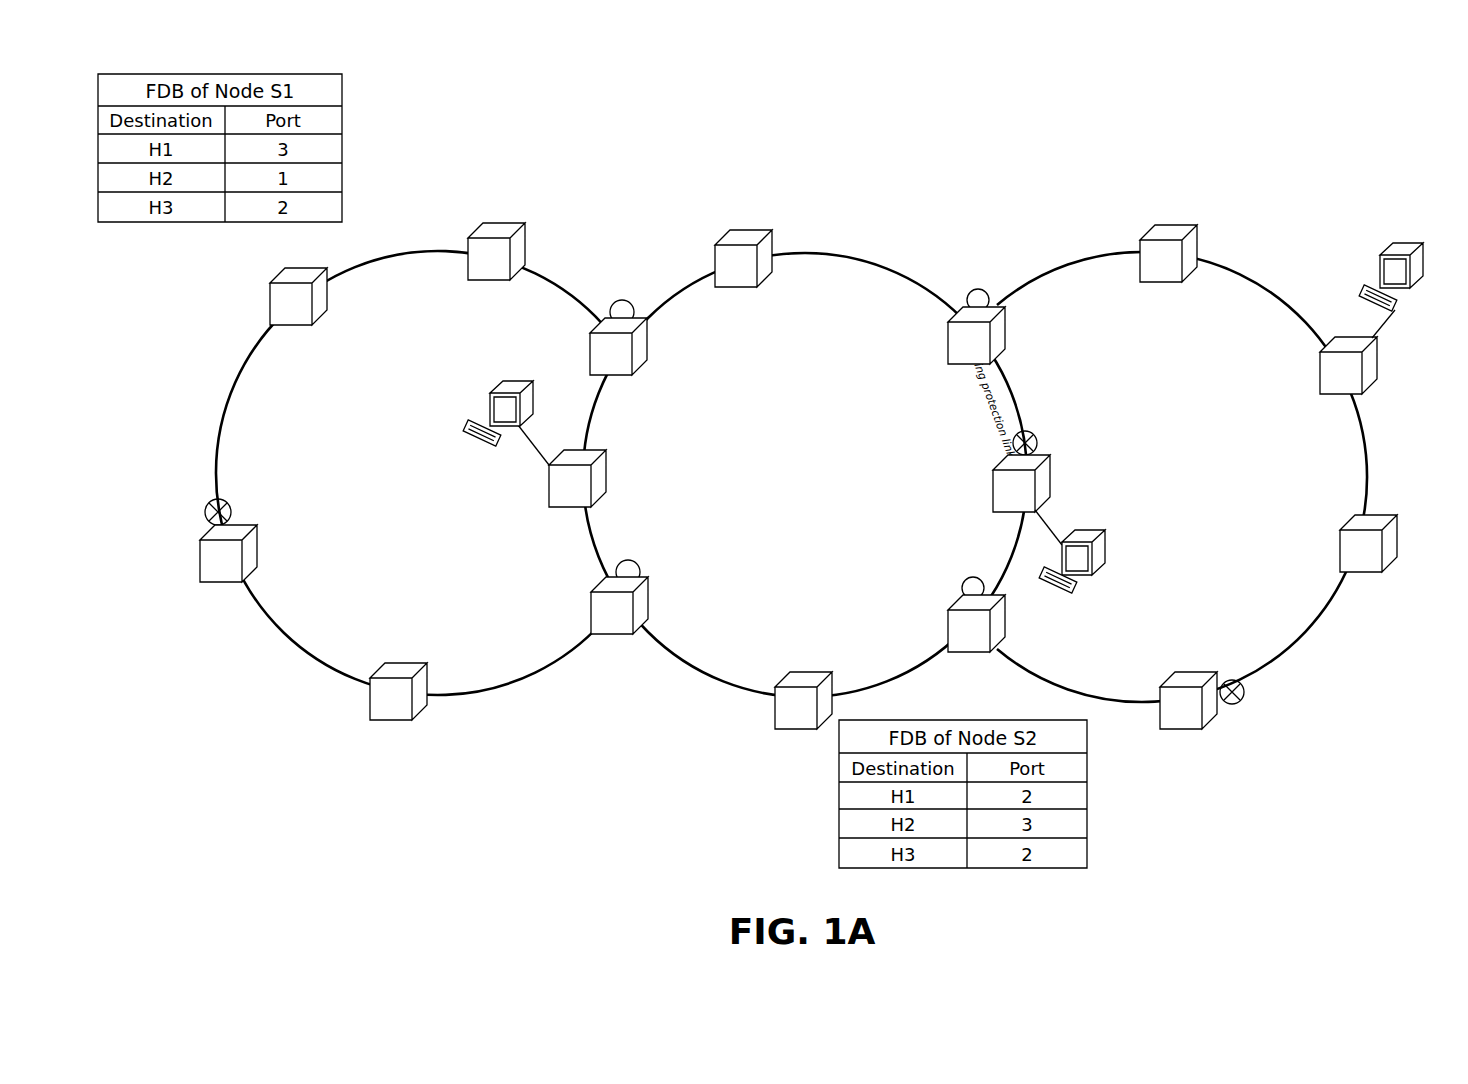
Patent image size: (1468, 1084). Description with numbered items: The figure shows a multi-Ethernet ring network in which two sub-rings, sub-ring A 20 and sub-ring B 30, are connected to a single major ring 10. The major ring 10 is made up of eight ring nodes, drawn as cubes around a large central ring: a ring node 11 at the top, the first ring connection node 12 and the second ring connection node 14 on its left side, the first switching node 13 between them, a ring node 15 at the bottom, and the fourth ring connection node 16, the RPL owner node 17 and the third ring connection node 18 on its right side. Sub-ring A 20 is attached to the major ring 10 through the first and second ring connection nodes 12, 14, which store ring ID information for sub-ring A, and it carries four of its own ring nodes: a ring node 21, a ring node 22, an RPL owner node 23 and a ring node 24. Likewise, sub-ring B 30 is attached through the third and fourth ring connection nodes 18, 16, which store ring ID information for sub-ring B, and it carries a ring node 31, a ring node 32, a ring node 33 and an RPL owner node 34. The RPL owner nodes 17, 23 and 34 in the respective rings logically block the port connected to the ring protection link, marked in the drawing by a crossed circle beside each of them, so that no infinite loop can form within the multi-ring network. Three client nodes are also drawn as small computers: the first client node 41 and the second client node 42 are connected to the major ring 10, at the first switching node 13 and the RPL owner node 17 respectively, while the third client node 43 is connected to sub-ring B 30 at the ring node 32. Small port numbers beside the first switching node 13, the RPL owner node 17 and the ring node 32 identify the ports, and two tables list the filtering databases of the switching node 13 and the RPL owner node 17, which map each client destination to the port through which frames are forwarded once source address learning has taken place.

The major ring 10 is at (875, 262).
The ring node 11 is at (740, 231).
The ring connection node A1 12 is at (640, 375).
The node S1 13 is at (607, 470).
The ring connection node A2 14 is at (648, 594).
The ring node 15 is at (800, 685).
The ring connection node B2 16 is at (955, 603).
The RPL owner node S2 17 is at (990, 462).
The ring connection node B1 18 is at (946, 332).
The sub-ring A 20 is at (408, 250).
The ring node 21 is at (497, 224).
The ring node 22 is at (270, 297).
The RPL owner node 23 is at (205, 528).
The ring node 24 is at (391, 720).
The sub-ring B 30 is at (1075, 262).
The ring node 31 is at (1163, 225).
The ring node 32 is at (1322, 394).
The ring node 33 is at (1340, 538).
The RPL owner node 34 is at (1185, 672).
The client node H1 41 is at (490, 397).
The client node H2 42 is at (1105, 552).
The client node H3 43 is at (1410, 253).